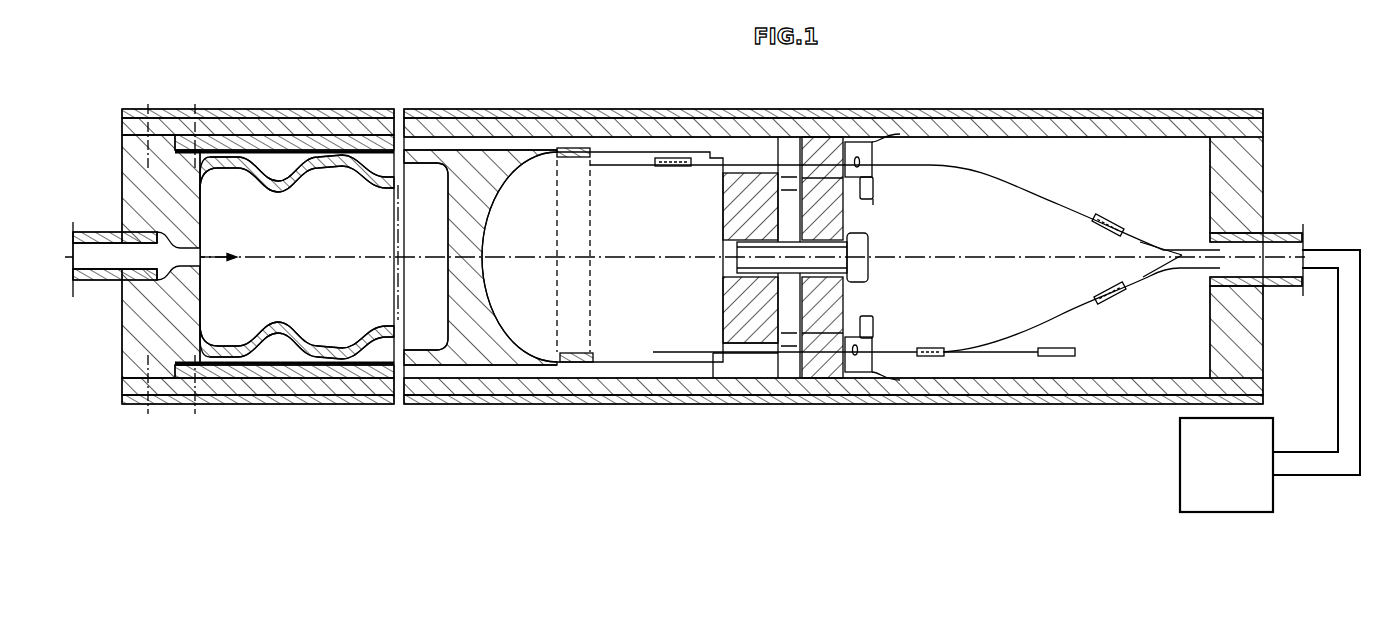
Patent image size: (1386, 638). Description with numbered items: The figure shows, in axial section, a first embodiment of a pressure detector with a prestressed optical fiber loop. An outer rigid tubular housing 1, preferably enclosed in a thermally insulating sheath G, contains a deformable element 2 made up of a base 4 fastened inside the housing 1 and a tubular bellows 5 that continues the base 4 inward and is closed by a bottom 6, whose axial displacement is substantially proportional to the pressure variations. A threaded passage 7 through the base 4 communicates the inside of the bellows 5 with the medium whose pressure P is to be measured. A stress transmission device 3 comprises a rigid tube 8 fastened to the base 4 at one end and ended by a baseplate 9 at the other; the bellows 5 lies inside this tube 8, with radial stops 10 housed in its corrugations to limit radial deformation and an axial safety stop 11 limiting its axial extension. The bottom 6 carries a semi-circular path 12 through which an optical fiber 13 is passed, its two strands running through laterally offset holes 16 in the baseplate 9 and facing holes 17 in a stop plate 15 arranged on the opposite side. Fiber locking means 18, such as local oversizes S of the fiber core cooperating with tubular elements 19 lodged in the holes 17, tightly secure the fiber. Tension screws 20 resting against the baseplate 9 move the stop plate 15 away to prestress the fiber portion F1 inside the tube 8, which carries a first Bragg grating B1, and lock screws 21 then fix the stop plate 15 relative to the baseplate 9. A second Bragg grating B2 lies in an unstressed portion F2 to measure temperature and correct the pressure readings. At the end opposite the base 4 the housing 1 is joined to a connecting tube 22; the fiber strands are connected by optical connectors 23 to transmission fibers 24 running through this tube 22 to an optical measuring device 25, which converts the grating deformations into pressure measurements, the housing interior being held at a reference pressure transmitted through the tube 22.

The outer rigid tubular housing 1 is at (272, 120).
The deformable element 2 is at (295, 209).
The stress transmission device 3 is at (727, 107).
The base 4 is at (190, 165).
The tubular bellows 5 is at (338, 160).
The bottom 6 is at (529, 190).
The threaded passage 7 is at (110, 233).
The rigid tube 8 is at (436, 148).
The baseplate 9 is at (770, 150).
The radial stops 10 is at (297, 150).
The axial safety stop 11 is at (578, 150).
The semi-circular path 12 is at (492, 279).
The optical fiber 13 is at (650, 362).
The stop plate 15 is at (824, 143).
The holes 16 is at (748, 365).
The holes 17 is at (818, 378).
The fiber locking means 18 is at (900, 382).
The tubular elements 19 is at (920, 116).
The tension screws 20 is at (873, 195).
The lock screws 21 is at (866, 251).
The connecting tube 22 is at (1290, 236).
The optical connectors 23 is at (1090, 285).
The transmission fibers 24 is at (1160, 272).
The optical measuring device 25 is at (1208, 480).
The local oversizes S is at (858, 158).
The pressure P is at (218, 243).
The sheath G is at (1036, 110).
The optical fiber portion F1 is at (660, 352).
The fiber portion F2 is at (1050, 320).
The optical grating B1 is at (690, 167).
The second Bragg grating B2 is at (1075, 352).